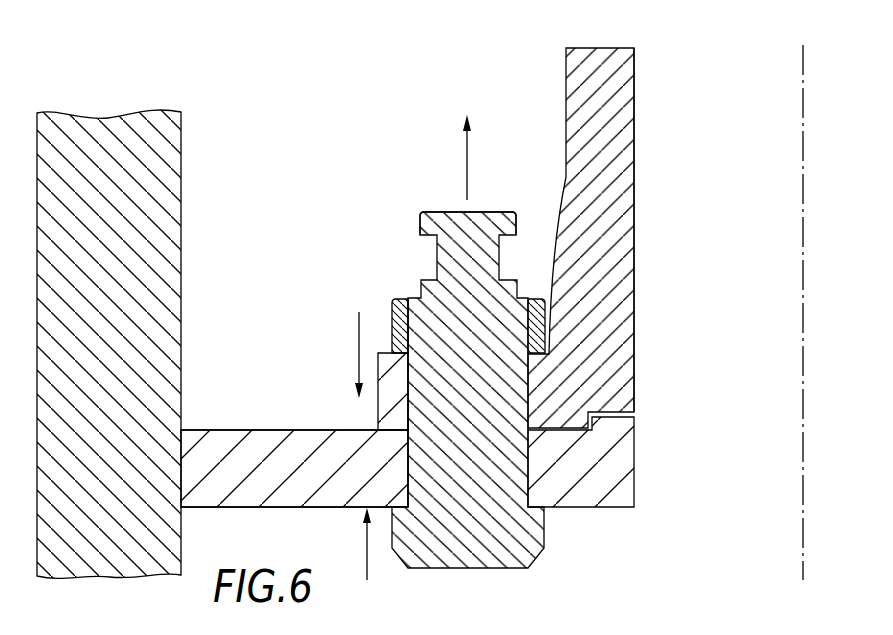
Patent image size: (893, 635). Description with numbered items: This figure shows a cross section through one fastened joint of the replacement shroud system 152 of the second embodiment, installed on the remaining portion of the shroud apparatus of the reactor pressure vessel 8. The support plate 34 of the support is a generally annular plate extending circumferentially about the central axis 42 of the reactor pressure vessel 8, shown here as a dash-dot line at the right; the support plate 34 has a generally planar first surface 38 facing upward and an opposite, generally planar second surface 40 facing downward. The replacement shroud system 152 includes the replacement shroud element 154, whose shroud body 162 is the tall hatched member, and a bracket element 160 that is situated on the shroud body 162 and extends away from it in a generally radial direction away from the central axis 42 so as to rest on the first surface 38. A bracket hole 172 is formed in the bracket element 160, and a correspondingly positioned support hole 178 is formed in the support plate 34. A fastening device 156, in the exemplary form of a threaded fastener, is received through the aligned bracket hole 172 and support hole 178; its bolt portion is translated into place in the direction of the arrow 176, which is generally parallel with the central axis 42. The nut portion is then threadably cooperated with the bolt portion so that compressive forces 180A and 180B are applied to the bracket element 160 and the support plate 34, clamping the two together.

The reactor pressure vessel 8 is at (182, 187).
The support plate 34 is at (248, 508).
The first surface 38 is at (229, 430).
The second surface 40 is at (196, 508).
The central axis 42 is at (803, 297).
The replacement shroud system 152 is at (660, 165).
The replacement shroud element 154 is at (634, 78).
The fastening device 156 is at (497, 211).
The bracket element 160 is at (378, 418).
The shroud body 162 is at (634, 272).
The bracket hole 172 is at (403, 395).
The arrow 176 is at (467, 161).
The support hole 178 is at (415, 496).
The compressive force 180A is at (361, 323).
The compressive force 180B is at (367, 552).